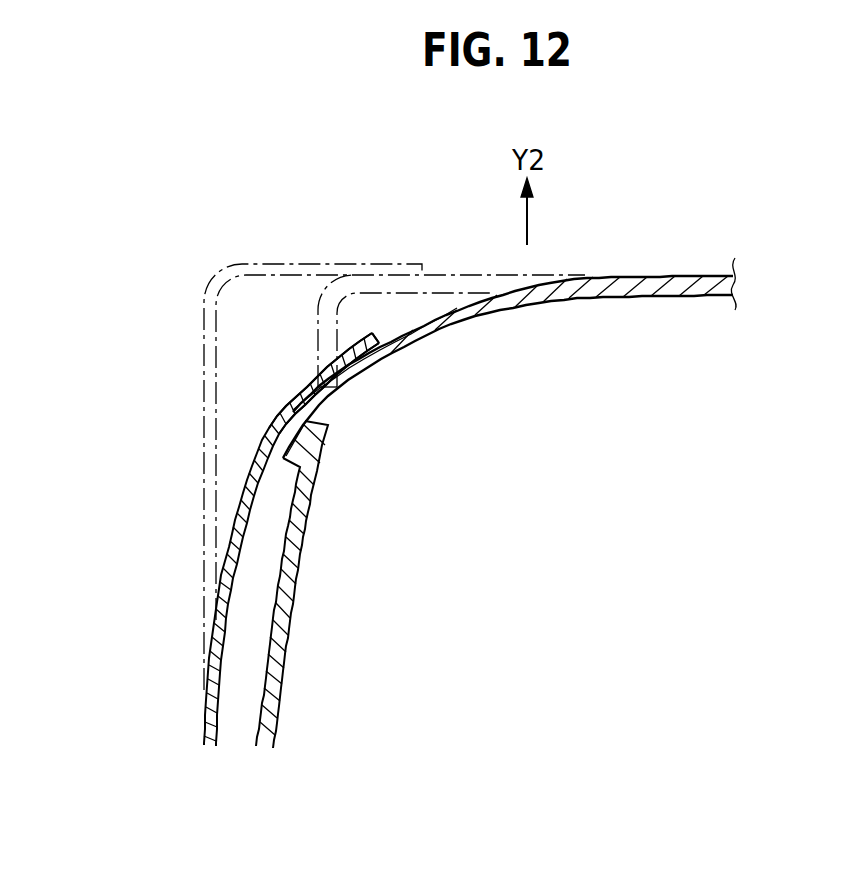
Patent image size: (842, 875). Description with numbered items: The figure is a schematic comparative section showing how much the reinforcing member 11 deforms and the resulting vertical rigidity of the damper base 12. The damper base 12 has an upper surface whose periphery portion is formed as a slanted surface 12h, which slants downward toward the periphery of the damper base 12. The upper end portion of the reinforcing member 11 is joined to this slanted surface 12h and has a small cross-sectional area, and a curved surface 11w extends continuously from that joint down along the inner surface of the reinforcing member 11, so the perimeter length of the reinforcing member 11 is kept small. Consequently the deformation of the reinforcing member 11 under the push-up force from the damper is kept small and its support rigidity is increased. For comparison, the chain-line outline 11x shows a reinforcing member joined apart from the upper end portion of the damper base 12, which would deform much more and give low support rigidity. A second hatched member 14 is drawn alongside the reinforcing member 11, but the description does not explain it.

The reinforcing member 11 is at (248, 478).
The curved surface 11w is at (282, 405).
The reinforcing member apart from the damper base upper end portion 11x is at (204, 342).
The damper base 12 is at (672, 276).
The slanted surface 12h is at (456, 305).
The adhesive/support member 14 is at (290, 636).